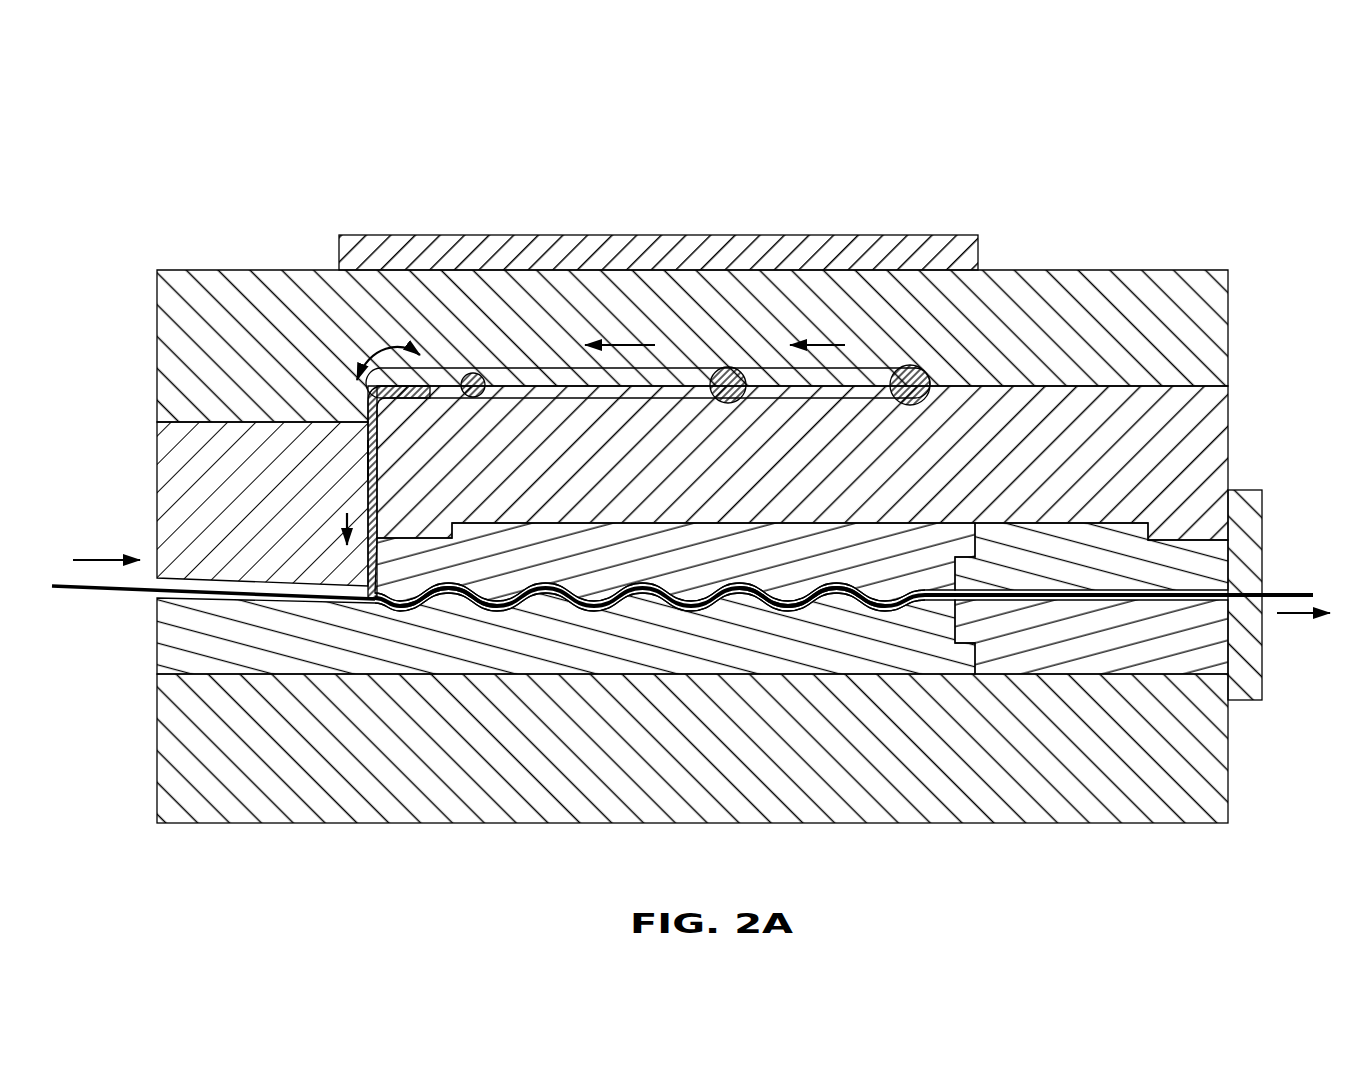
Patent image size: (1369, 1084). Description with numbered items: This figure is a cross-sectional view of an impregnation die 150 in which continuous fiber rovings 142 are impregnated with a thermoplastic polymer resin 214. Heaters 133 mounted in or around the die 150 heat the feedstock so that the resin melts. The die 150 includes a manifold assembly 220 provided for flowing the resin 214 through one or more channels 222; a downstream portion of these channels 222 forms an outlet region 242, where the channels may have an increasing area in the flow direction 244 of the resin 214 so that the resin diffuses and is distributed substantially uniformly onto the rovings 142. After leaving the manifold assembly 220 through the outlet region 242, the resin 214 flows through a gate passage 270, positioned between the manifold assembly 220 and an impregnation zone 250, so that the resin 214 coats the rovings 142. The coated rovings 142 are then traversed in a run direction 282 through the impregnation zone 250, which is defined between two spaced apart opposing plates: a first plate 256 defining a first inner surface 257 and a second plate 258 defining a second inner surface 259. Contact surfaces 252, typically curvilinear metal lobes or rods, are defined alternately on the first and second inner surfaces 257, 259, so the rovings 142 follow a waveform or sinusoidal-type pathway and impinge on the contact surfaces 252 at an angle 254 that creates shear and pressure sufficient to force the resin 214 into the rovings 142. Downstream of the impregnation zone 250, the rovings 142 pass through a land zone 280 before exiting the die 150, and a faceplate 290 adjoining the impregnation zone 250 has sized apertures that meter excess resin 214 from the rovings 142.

The impregnation die 150 is at (1043, 190).
The heaters 133 is at (500, 235).
The resin 214 is at (368, 437).
The outlet region 242 is at (418, 350).
The channels 222 is at (462, 365).
The flow direction 244 is at (612, 345).
The manifold assembly 220 is at (707, 350).
The first plate 256 is at (802, 463).
The first inner surface 257 is at (921, 590).
The second plate 258 is at (873, 650).
The second inner surface 259 is at (917, 603).
The contact surfaces 252 is at (490, 590).
The angle 254 is at (715, 588).
The impregnation zone 250 is at (555, 608).
The gate passage 270 is at (385, 462).
The land zone 280 is at (1148, 613).
The run direction 282 is at (95, 562).
The continuous fiber rovings 142 is at (135, 590).
The faceplate 290 is at (1262, 525).